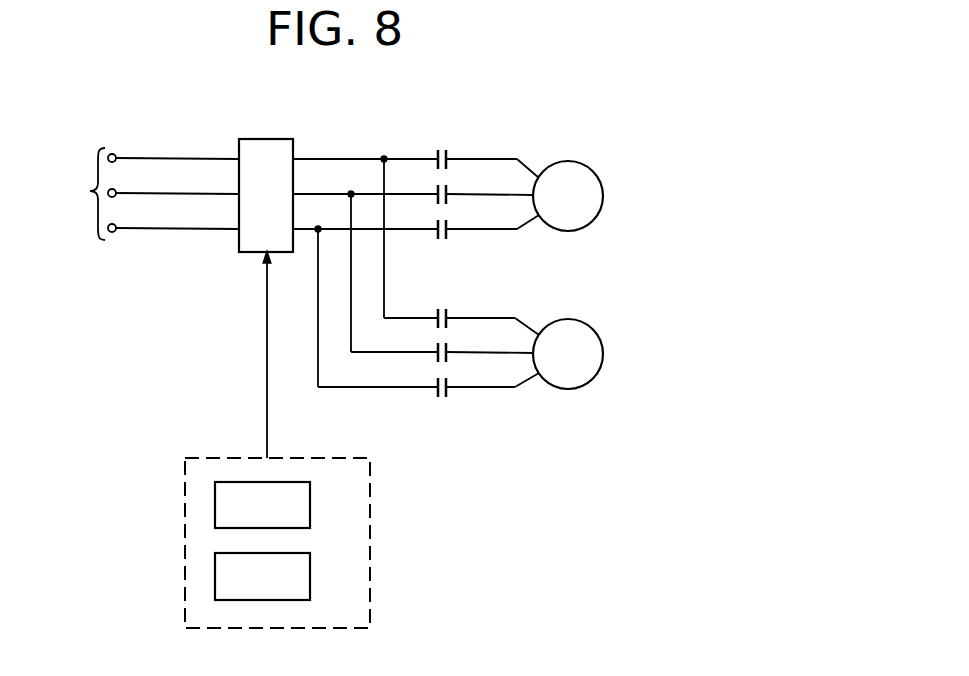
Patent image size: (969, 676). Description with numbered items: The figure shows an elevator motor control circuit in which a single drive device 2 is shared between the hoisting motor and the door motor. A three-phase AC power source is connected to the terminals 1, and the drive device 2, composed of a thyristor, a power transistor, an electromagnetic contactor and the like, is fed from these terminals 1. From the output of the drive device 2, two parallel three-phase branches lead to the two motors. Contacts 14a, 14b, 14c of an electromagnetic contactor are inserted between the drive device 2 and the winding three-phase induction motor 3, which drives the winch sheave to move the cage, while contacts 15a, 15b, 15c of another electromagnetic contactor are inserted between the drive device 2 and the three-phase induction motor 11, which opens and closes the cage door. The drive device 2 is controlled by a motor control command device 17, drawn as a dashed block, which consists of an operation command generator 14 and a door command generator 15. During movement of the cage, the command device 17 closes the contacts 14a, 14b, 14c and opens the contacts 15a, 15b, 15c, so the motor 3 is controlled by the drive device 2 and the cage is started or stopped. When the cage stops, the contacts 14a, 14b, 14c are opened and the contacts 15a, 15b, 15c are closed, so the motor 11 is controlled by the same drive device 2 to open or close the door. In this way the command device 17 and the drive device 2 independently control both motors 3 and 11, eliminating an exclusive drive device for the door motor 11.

The terminals 1 is at (75, 200).
The drive device 2 is at (271, 139).
The three-phase induction motor 3 is at (603, 196).
The three-phase induction motor 11 is at (603, 354).
The contact 14a is at (448, 156).
The contact 14b is at (448, 191).
The contact 14c is at (448, 226).
The contact 15a is at (448, 315).
The contact 15b is at (448, 349).
The contact 15c is at (448, 384).
The operation command generator 14 is at (310, 505).
The door command generator 15 is at (310, 583).
The motor control command device 17 is at (307, 458).